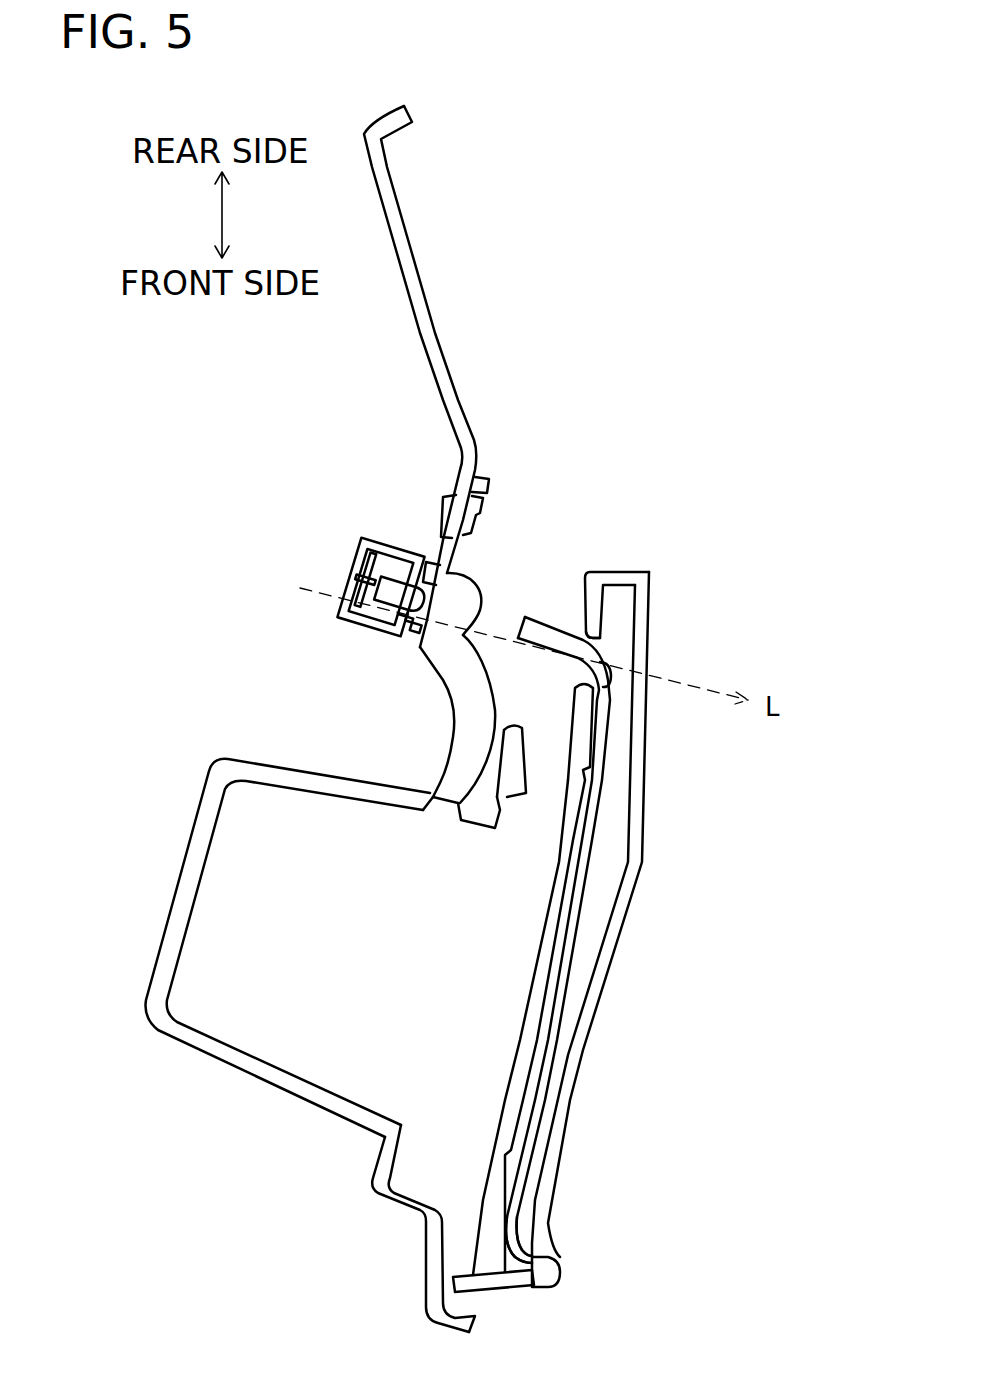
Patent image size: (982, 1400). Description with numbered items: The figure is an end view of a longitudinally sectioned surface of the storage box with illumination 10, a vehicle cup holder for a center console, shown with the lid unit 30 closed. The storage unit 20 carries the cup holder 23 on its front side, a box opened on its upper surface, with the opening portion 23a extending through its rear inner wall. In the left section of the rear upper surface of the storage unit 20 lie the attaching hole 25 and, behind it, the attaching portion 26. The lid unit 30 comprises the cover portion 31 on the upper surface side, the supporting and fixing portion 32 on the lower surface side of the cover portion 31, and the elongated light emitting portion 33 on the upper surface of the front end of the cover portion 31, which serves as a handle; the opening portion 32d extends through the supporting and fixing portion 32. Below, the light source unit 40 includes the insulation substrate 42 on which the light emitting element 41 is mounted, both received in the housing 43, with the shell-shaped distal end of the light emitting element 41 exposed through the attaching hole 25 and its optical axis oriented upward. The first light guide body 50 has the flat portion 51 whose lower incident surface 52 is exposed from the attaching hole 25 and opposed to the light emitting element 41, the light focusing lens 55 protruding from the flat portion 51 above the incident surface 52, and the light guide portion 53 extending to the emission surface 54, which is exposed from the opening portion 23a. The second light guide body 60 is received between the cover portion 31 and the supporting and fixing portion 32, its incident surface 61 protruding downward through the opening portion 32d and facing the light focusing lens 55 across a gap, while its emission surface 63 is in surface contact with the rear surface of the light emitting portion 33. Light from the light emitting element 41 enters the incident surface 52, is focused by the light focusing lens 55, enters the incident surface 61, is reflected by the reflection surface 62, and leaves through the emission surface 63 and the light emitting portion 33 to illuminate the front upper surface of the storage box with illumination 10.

The storage box with illumination 10 is at (773, 70).
The storage unit 20 is at (396, 112).
The cup holder 23 is at (285, 1063).
The opening portion 23a is at (425, 808).
The attaching hole 25 is at (442, 548).
The attaching portion 26 is at (488, 500).
The lid unit 30 is at (612, 920).
The cover portion 31 is at (650, 640).
The supporting and fixing portion 32 is at (603, 572).
The opening portion 32d is at (600, 645).
The light emitting portion 33 is at (558, 1272).
The light source unit 40 is at (323, 618).
The light emitting element 41 is at (404, 627).
The insulation substrate 42 is at (370, 610).
The housing 43 is at (348, 590).
The first light guide body 50 is at (444, 762).
The flat portion 51 is at (483, 472).
The incident surface 52 is at (430, 570).
The light guide portion 53 is at (458, 702).
The emission surface 54 is at (437, 807).
The light focusing lens 55 is at (472, 594).
The second light guide body 60 is at (602, 946).
The incident surface 61 is at (523, 632).
The reflection surface 62 is at (610, 660).
The emission surface 63 is at (553, 1250).